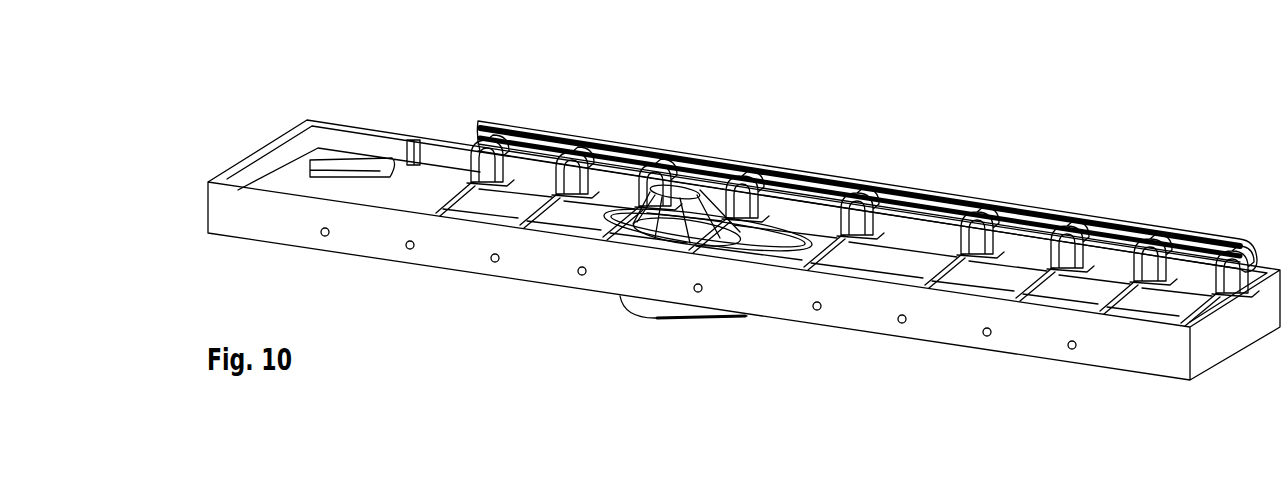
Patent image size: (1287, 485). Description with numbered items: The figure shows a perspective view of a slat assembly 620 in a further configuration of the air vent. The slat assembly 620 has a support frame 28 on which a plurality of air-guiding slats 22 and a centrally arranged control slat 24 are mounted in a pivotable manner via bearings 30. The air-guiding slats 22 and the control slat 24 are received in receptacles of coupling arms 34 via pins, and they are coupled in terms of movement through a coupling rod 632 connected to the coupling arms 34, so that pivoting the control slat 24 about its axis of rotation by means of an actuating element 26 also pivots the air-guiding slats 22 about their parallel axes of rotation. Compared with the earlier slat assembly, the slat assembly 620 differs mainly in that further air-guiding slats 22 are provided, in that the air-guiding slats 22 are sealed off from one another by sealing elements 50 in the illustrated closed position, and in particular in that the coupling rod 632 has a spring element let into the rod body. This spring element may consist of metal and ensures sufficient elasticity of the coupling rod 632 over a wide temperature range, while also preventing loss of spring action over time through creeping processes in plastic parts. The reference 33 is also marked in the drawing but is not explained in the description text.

The slat assembly 620 is at (1040, 165).
The support frame 28 is at (330, 132).
The air-guiding slats 22 is at (524, 197).
The coupling rod 632 is at (815, 166).
The sealing elements 50 is at (538, 195).
The coupling arms 34 is at (667, 168).
The clip 33 is at (1150, 257).
The control slat 24 is at (773, 252).
The bearings 30 is at (493, 258).
The actuating element 26 is at (653, 313).